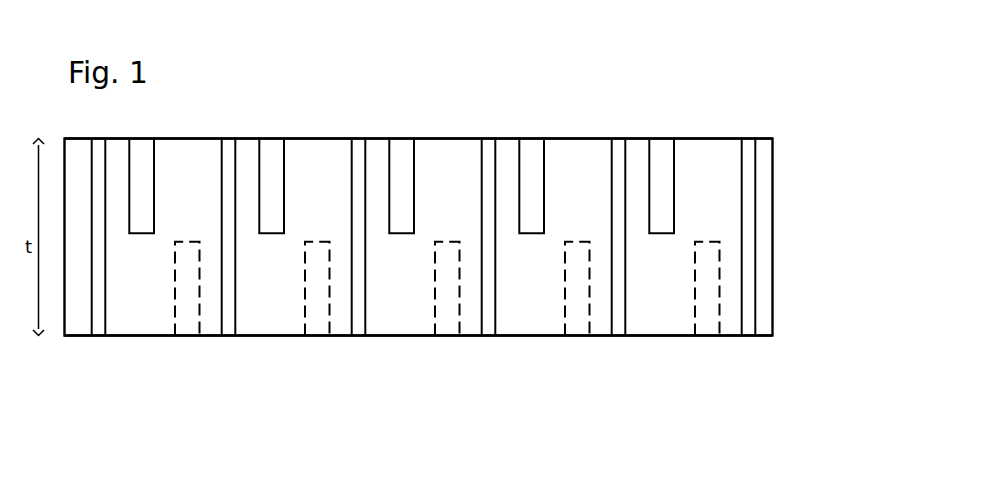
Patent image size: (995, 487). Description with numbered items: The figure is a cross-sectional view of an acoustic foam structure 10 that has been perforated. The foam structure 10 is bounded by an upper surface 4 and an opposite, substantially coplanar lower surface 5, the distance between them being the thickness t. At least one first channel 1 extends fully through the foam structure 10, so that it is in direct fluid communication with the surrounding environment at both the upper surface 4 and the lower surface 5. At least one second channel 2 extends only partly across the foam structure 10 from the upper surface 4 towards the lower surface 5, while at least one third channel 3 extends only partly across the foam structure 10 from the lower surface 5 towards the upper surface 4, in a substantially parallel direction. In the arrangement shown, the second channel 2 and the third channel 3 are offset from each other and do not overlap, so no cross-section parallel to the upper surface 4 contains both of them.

The foam structure 10 is at (558, 136).
The upper surface 4 is at (374, 138).
The lower surface 5 is at (113, 336).
The first channel 1 is at (229, 297).
The second channel 2 is at (402, 220).
The third channel 3 is at (576, 308).